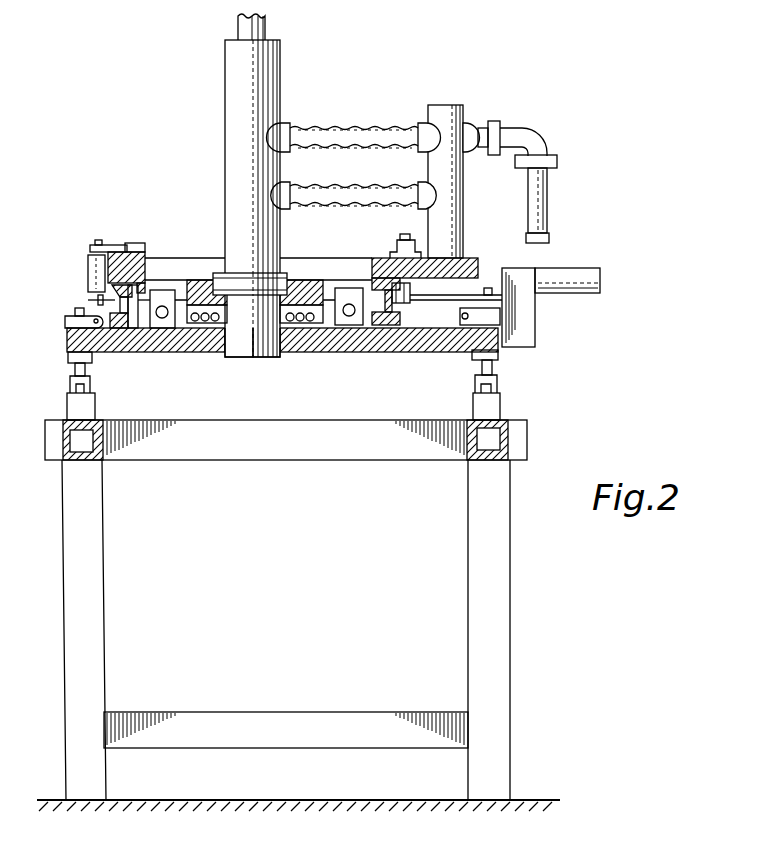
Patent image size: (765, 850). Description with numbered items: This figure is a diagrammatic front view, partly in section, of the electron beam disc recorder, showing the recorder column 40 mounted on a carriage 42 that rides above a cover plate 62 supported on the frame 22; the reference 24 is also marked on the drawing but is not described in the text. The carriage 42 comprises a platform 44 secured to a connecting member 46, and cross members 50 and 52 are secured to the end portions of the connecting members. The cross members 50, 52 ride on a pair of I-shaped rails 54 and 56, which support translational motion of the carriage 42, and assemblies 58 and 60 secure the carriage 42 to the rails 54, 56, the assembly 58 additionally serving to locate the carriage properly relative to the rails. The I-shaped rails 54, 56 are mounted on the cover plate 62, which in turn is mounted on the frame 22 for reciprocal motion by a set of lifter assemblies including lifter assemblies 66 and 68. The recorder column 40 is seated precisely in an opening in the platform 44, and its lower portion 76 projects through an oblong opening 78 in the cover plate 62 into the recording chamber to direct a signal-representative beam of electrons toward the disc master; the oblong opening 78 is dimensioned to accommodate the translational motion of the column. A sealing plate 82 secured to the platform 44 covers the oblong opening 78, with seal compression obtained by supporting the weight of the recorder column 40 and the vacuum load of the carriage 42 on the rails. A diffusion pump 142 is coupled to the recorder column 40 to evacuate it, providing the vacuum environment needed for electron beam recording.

The frame 22 is at (510, 568).
The carriage assembly 24 is at (618, 103).
The recorder column 40 is at (223, 78).
The carriage 42 is at (225, 236).
The platform 44 is at (312, 275).
The connecting member 46 is at (178, 263).
The cross member 50 is at (118, 254).
The cross member 52 is at (478, 258).
The I-shaped rail 54 is at (122, 326).
The I-shaped rail 56 is at (385, 325).
The assembly 58 is at (88, 258).
The assembly 60 is at (488, 288).
The cover plate 62 is at (70, 340).
The lifter assembly 66 is at (72, 371).
The lifter assembly 68 is at (497, 365).
The lower portion of the recorder column 76 is at (249, 357).
The oblong opening 78 is at (278, 357).
The sealing plate 82 is at (197, 324).
The diffusion pump 142 is at (547, 195).